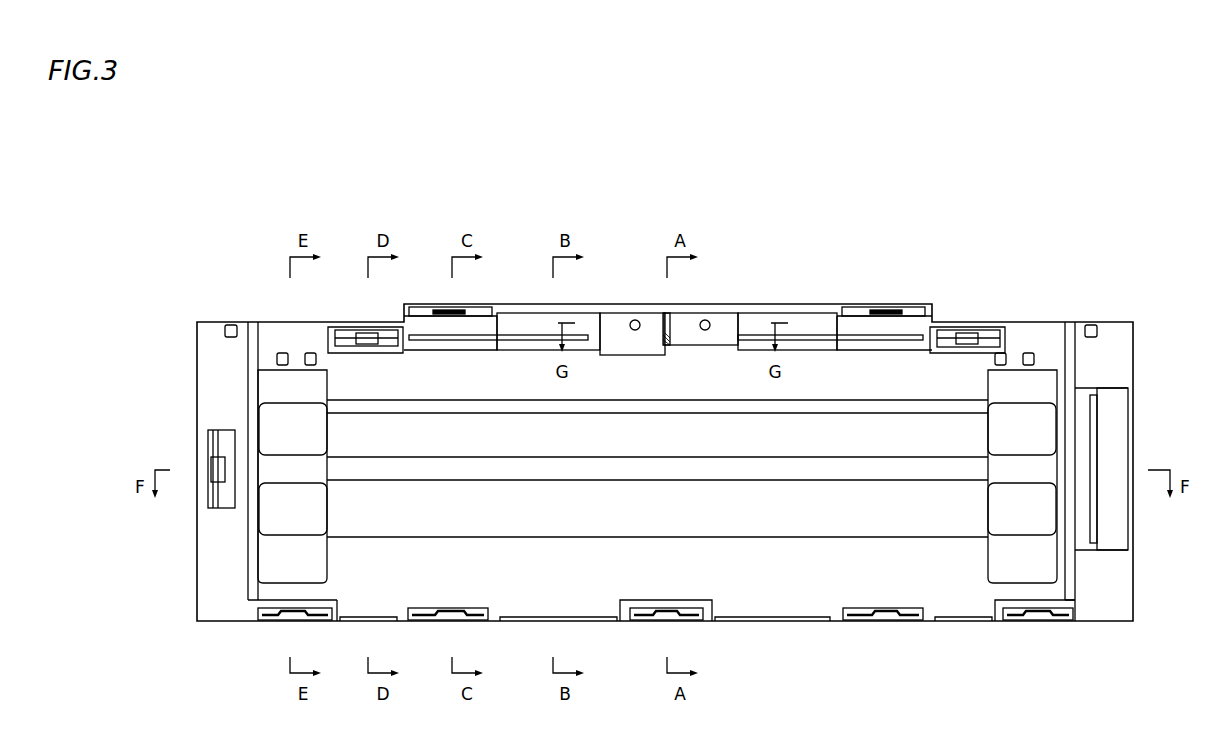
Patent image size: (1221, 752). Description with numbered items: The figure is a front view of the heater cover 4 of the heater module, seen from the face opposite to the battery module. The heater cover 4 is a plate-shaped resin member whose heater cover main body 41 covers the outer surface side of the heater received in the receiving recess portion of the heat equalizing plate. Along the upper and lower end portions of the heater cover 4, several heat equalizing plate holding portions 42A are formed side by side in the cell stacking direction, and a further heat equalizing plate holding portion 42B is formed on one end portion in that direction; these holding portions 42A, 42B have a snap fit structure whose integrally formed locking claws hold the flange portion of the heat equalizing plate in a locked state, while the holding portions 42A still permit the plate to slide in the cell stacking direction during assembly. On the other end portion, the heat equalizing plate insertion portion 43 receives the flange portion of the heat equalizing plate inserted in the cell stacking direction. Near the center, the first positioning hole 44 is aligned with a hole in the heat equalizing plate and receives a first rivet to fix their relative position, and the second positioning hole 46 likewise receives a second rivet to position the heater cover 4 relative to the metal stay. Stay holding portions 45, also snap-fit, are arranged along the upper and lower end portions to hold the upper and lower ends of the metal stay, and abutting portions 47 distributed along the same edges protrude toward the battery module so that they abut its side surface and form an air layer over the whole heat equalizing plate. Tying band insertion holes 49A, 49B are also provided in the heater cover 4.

The heater cover 4 is at (1060, 295).
The heater cover main body 41 is at (800, 512).
The heat equalizing plate holding portion 42A is at (368, 330).
The heat equalizing plate holding portion 42B is at (215, 463).
The heat equalizing plate insertion portion 43 is at (1095, 425).
The first positioning hole 44 is at (635, 320).
The stay holding portion 45 is at (448, 308).
The second positioning hole 46 is at (708, 320).
The abutting portion 47 is at (520, 330).
The tying band insertion hole 49A is at (310, 353).
The tying band insertion hole 49B is at (232, 324).